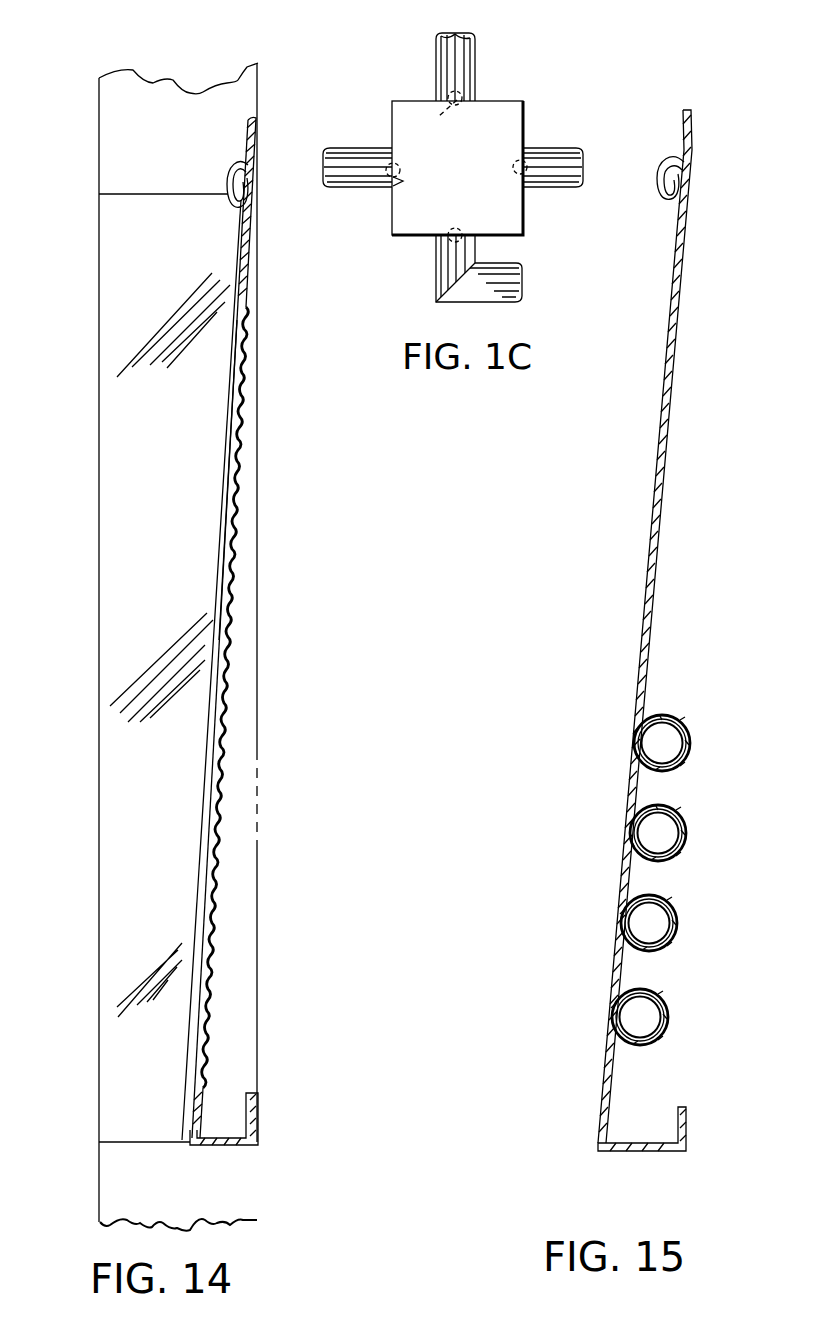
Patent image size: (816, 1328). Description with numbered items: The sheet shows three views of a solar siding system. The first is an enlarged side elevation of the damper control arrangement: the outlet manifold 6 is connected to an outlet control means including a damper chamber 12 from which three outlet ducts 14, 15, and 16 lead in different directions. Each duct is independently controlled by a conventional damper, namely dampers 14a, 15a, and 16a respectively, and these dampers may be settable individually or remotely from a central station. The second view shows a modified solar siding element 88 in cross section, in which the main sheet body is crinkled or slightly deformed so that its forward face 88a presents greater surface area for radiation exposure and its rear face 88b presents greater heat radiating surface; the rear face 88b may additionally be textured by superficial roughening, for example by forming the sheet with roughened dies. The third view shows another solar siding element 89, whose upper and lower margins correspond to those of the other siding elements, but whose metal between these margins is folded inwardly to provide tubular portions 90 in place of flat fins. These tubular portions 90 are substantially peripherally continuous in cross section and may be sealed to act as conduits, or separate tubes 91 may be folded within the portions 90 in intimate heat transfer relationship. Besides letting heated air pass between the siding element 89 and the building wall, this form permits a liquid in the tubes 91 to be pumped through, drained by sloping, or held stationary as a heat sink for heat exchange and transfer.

In FIG. 1C, the outlet manifold 6 is at (447, 67).
In FIG. 1C, the damper chamber 12 is at (392, 126).
In FIG. 1C, the outlet duct 14 is at (553, 153).
In FIG. 1C, the damper 14a is at (525, 192).
In FIG. 1C, the outlet duct 15 is at (440, 275).
In FIG. 1C, the damper 15a is at (440, 233).
In FIG. 1C, the outlet duct 16 is at (360, 180).
In FIG. 1C, the damper 16a is at (400, 185).
In FIG. 14, the solar siding element 88 is at (233, 612).
In FIG. 14, the forward face 88a is at (217, 737).
In FIG. 14, the rear face 88b is at (228, 715).
In FIG. 15, the solar siding element 89 is at (646, 570).
In FIG. 15, the tubular portions 90 is at (690, 725).
In FIG. 15, the tubes 91 is at (684, 826).